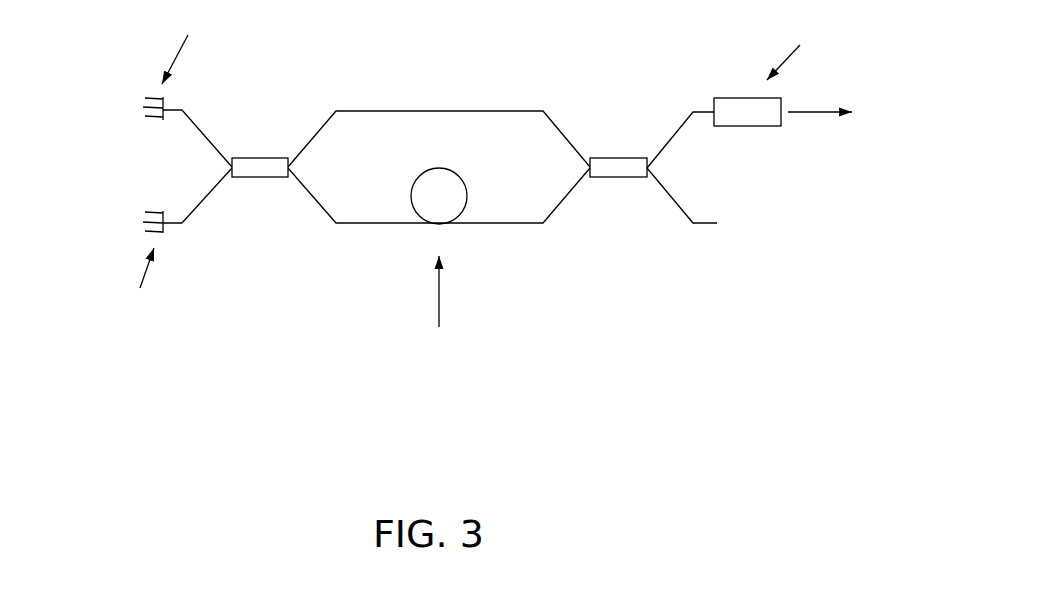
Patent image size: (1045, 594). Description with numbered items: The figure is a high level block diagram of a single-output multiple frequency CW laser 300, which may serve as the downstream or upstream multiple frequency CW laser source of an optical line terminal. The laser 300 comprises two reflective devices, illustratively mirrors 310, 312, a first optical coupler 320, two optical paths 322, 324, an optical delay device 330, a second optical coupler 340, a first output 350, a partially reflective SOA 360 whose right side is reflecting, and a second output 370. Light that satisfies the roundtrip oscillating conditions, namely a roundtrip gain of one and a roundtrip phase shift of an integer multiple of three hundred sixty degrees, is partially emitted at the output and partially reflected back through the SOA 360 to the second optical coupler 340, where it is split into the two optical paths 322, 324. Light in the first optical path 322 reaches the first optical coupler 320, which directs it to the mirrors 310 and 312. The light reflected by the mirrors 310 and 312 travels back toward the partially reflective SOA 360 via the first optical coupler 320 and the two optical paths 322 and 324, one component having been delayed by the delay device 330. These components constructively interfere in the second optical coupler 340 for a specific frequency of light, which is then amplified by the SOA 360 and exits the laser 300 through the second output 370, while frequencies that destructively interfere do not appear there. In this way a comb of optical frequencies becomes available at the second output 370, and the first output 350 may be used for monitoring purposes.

The single-output multiple frequency CW laser 300 is at (743, 460).
The reflective device (mirror) 310 is at (145, 90).
The reflective device (mirror) 312 is at (143, 212).
The first optical coupler 320 is at (275, 158).
The first optical path 322 is at (392, 111).
The second optical path 324 is at (492, 223).
The optical delay device 330 is at (420, 177).
The second optical coupler 340 is at (620, 158).
The first output 350 is at (717, 223).
The partially reflective SOA 360 is at (747, 126).
The second output 370 is at (890, 98).